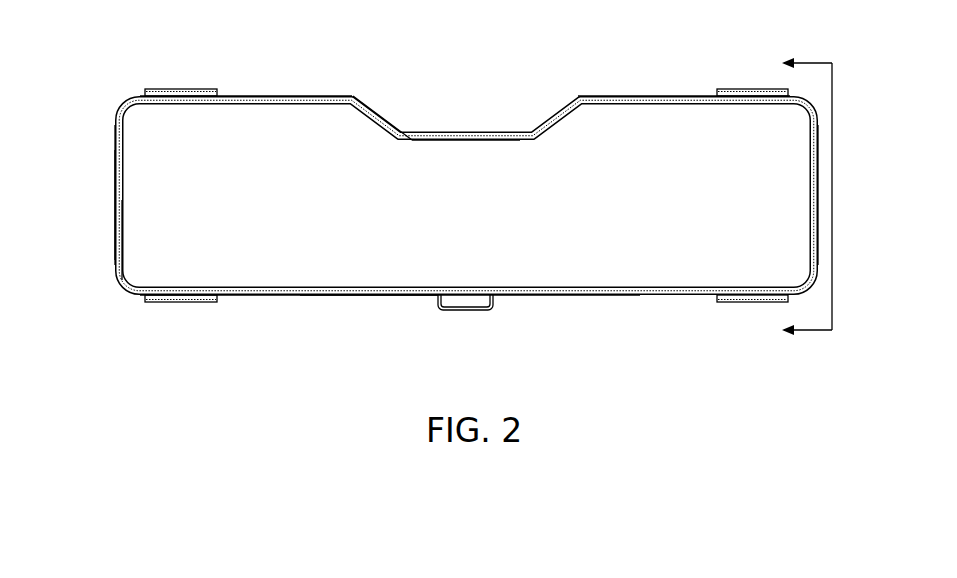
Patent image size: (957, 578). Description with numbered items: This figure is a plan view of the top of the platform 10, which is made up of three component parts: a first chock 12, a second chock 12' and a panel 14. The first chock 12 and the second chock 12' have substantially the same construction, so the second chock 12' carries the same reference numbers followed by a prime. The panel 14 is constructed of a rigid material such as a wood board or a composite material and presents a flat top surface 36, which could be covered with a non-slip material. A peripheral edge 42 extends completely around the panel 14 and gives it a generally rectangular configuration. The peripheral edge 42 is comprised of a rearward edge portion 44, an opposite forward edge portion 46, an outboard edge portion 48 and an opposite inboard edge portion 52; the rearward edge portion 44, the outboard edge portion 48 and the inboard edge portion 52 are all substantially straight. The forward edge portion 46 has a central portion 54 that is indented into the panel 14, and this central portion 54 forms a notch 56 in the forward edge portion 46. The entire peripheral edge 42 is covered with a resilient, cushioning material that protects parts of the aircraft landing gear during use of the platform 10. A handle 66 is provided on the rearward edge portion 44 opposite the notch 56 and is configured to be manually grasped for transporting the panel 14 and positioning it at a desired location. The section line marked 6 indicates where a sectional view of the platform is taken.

The platform 10 is at (575, 38).
The first chock 12 is at (159, 219).
The second chock 12' is at (726, 174).
The panel 14 is at (299, 93).
The top surface 36 is at (138, 170).
The peripheral edge 42 is at (114, 213).
The rearward edge portion 44 is at (345, 298).
The forward edge portion 46 is at (631, 94).
The outboard edge portion 48 is at (815, 193).
The inboard edge portion 52 is at (118, 253).
The central portion 54 is at (491, 131).
The notch 56 is at (415, 101).
The handle 66 is at (468, 311).
The section line 6- 6 is at (799, 198).